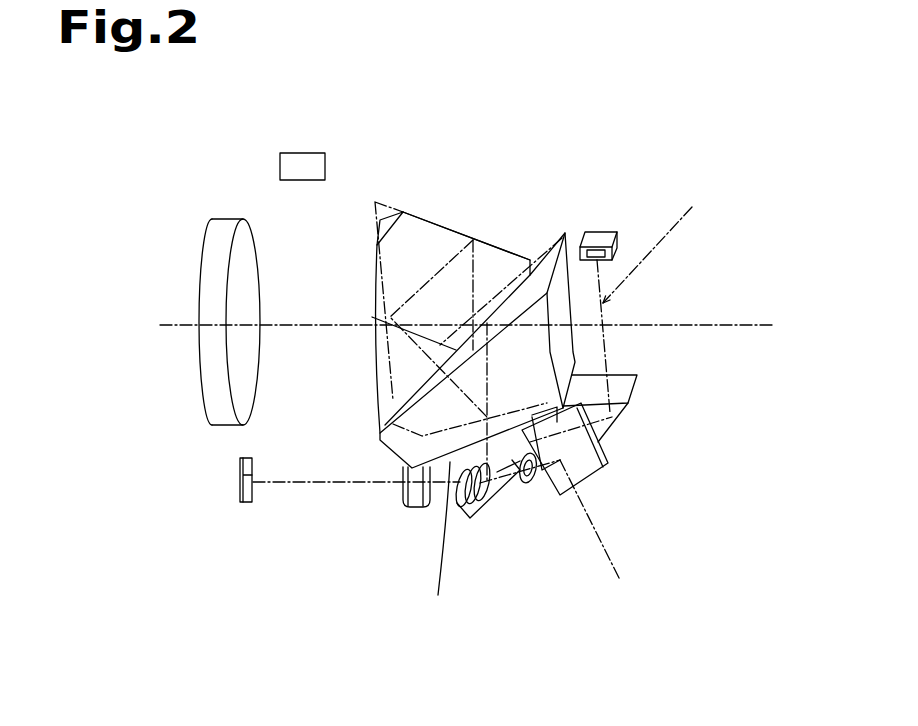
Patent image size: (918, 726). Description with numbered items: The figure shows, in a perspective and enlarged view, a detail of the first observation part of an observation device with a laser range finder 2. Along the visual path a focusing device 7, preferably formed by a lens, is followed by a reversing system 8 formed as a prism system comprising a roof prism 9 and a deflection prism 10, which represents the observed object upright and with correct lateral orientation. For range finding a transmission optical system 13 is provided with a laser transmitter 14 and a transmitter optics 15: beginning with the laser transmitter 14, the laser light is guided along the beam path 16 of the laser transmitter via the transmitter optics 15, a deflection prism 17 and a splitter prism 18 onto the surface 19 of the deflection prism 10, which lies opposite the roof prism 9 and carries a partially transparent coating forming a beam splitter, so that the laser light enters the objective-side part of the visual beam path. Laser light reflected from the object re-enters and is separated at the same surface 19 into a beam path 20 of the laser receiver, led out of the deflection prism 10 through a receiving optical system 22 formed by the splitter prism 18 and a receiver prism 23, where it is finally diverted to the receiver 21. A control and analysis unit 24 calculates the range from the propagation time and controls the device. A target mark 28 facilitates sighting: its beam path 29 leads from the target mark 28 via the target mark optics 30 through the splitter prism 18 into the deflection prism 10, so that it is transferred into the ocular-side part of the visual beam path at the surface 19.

The laser range finder 2 is at (525, 547).
The focusing device 7 is at (217, 395).
The reversing system 8 is at (490, 197).
The roof prism 9 is at (433, 247).
The deflection prism 10 is at (383, 445).
The transmission optical system 13 is at (500, 550).
The laser transmitter 14 is at (463, 515).
The transmitter optics 15 is at (536, 478).
The beam path of the laser transmitter 16 is at (561, 510).
The deflection prism 17 is at (596, 487).
The splitter prism 18 is at (437, 545).
The surface 19 is at (440, 462).
The beam path of the laser receiver 20 is at (660, 242).
The receiver 21 is at (608, 218).
The receiving optical system 22 is at (693, 412).
The receiver prism 23 is at (620, 410).
The control and analysis unit 24 is at (298, 162).
The target mark 28 is at (246, 503).
The beam path to the target mark 29 is at (290, 485).
The target mark optics 30 is at (458, 535).